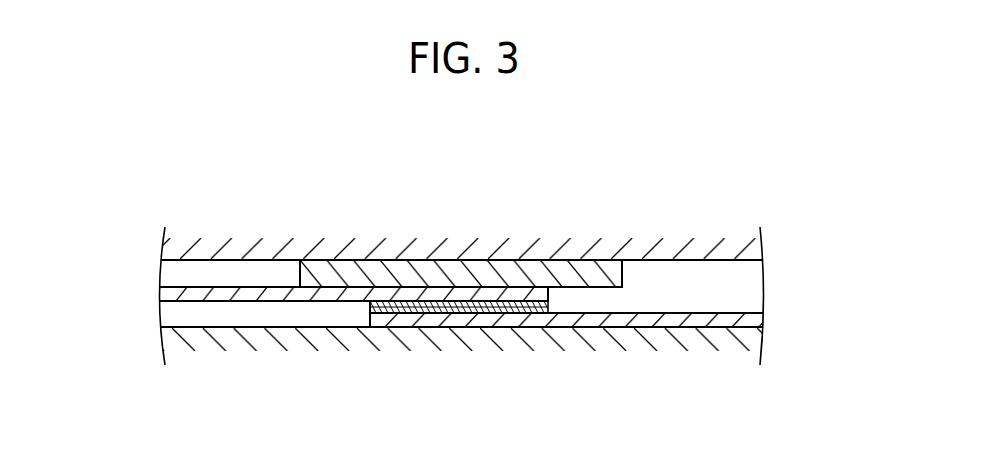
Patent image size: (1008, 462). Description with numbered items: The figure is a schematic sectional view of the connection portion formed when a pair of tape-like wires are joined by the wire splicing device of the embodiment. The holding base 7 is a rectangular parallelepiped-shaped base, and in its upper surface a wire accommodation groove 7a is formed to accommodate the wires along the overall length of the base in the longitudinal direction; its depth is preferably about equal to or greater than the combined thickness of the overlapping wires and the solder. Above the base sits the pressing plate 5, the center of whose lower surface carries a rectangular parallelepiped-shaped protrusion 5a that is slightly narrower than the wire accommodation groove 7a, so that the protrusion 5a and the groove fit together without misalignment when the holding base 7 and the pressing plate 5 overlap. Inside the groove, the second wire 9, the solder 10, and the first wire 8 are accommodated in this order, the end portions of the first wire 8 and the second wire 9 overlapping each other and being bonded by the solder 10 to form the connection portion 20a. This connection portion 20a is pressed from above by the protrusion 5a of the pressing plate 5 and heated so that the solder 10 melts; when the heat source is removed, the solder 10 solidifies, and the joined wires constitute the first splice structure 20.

The pressing plate 5 is at (718, 220).
The protrusion 5a is at (623, 274).
The holding base 7 is at (231, 359).
The wire accommodation groove 7a is at (172, 318).
The first wire 8 is at (172, 289).
The second wire 9 is at (758, 321).
The solder 10 is at (550, 308).
The first splice structure 20 is at (712, 299).
The connection portion 20a is at (486, 278).